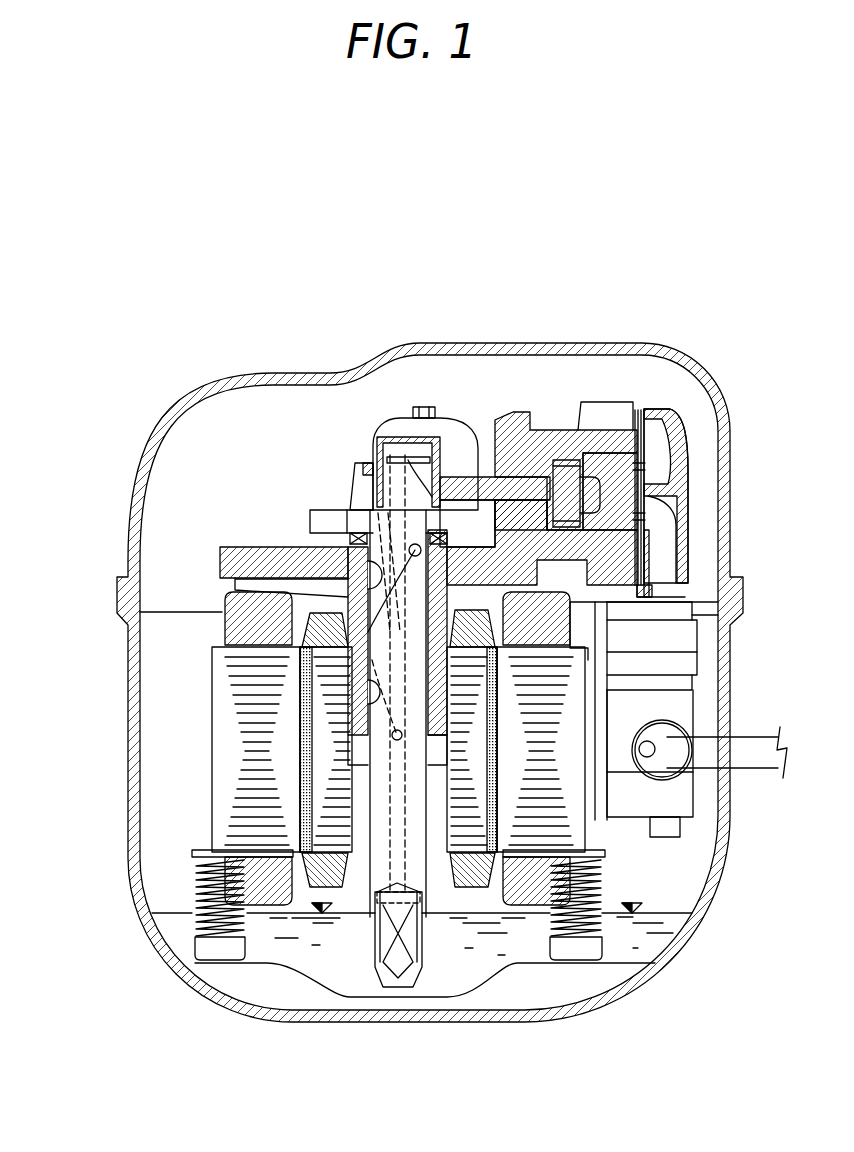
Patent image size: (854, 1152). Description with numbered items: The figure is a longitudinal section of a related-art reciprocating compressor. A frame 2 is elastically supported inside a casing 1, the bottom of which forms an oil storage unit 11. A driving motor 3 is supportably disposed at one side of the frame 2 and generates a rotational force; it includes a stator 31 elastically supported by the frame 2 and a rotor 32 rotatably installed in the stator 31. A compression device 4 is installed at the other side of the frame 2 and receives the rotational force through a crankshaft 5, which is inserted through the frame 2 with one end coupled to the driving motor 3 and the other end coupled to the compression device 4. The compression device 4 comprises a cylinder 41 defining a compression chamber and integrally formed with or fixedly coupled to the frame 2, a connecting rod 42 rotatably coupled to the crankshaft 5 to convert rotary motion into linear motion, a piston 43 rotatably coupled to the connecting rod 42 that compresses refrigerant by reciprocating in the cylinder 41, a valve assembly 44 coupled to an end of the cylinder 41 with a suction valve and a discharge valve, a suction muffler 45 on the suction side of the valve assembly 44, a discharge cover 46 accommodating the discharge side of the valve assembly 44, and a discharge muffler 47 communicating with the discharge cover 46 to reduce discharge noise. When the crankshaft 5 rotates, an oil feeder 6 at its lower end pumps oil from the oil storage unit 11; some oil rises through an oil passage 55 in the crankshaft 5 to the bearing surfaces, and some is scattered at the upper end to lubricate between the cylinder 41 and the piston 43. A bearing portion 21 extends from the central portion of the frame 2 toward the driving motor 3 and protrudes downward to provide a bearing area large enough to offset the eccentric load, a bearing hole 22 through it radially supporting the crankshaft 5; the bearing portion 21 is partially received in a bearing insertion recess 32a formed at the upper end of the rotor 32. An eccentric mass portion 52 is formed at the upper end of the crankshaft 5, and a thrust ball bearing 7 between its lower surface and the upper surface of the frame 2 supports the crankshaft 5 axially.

The casing 1 is at (173, 430).
The frame 2 is at (240, 561).
The driving motor 3 is at (308, 748).
The compression device 4 is at (492, 436).
The crankshaft 5 is at (365, 816).
The oil feeder 6 is at (375, 945).
The thrust ball bearing 7 is at (345, 515).
The oil storage unit 11 is at (538, 987).
The bearing portion 21 is at (350, 612).
The bearing hole 22 is at (348, 581).
The stator 31 is at (226, 750).
The rotor 32 is at (281, 748).
The bearing insertion recess 32a is at (357, 708).
The cylinder 41 is at (545, 470).
The connecting rod 42 is at (487, 482).
The piston 43 is at (598, 458).
The valve assembly 44 is at (638, 495).
The suction muffler 45 is at (690, 641).
The discharge cover 46 is at (660, 487).
The discharge muffler 47 is at (398, 430).
The eccentric mass portion 52 is at (317, 521).
The oil passage 55 is at (418, 868).